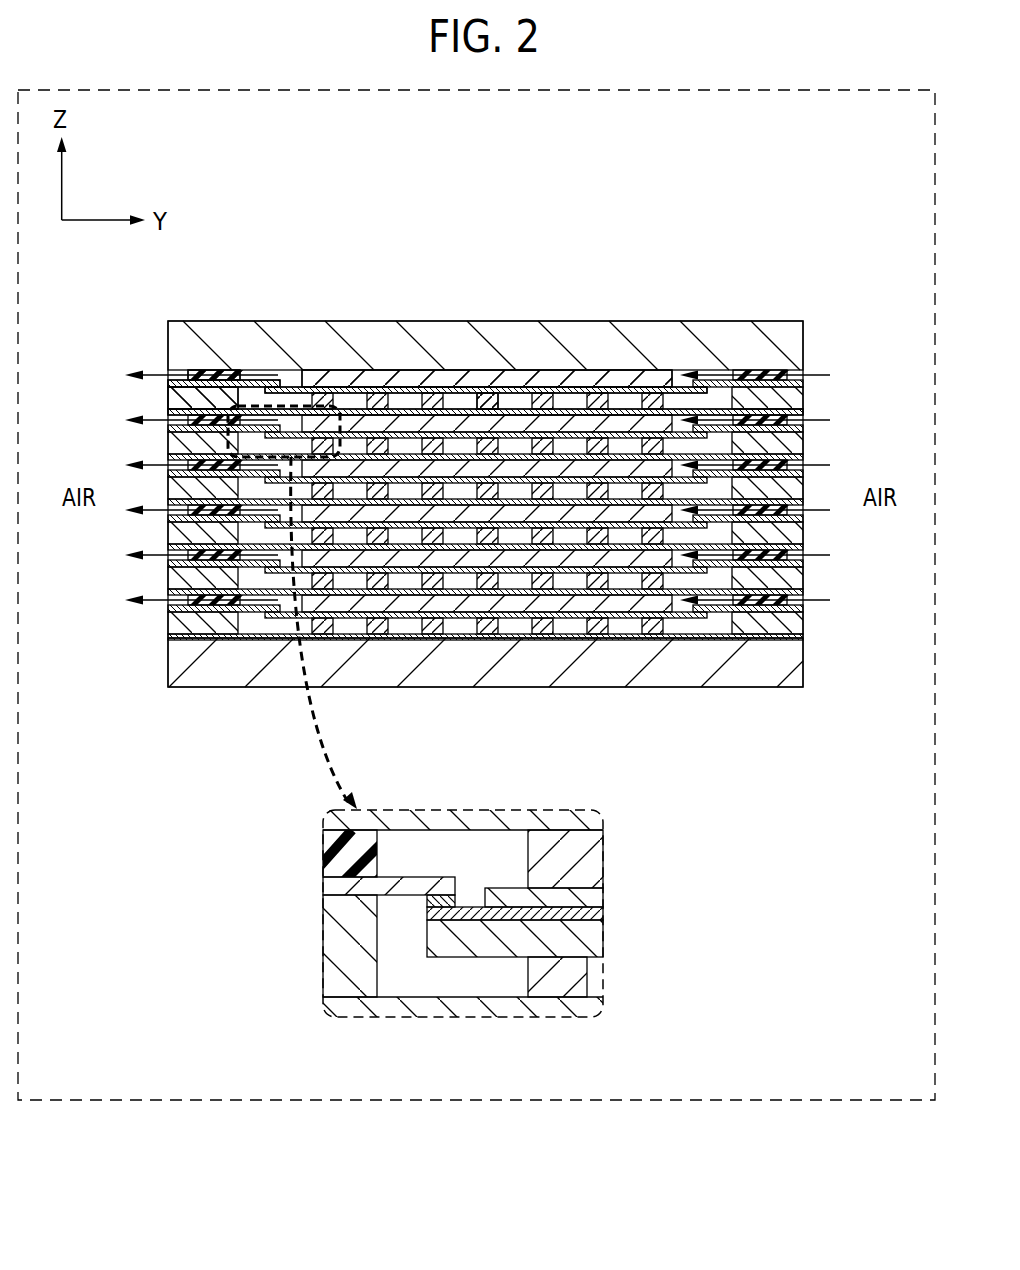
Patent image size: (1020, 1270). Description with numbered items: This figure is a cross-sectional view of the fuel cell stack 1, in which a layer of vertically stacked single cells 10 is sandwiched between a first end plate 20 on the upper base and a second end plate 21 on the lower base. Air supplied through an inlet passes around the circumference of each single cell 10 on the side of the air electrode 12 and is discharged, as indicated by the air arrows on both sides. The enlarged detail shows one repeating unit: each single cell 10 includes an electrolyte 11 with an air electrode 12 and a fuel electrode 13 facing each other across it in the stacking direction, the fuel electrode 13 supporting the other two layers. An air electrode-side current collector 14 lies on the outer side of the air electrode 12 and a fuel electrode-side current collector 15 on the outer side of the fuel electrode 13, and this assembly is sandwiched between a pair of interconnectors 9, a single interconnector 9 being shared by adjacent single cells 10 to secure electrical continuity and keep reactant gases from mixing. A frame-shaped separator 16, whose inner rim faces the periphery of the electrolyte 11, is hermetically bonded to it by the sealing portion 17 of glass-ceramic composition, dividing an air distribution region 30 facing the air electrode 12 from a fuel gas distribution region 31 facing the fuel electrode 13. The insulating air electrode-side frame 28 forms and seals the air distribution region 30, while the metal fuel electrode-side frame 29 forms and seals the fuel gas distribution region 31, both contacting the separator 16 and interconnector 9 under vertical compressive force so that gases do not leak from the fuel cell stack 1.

The fuel cell stack 1 is at (173, 738).
The interconnector 9 is at (347, 409).
The single cell 10 is at (498, 600).
The electrolyte 11 is at (593, 915).
The air electrode 12 is at (593, 898).
The fuel electrode 13 is at (557, 938).
The air electrode-side current collector 14 is at (572, 378).
The fuel electrode-side current collector 15 is at (490, 394).
The separator 16 is at (268, 384).
The sealing portion 17 is at (427, 902).
The first end plate 20 is at (743, 338).
The second end plate 21 is at (742, 663).
The air electrode-side frame 28 is at (214, 377).
The fuel electrode-side frame 29 is at (193, 400).
The air distribution region 30 is at (453, 869).
The fuel gas distribution region 31 is at (453, 994).